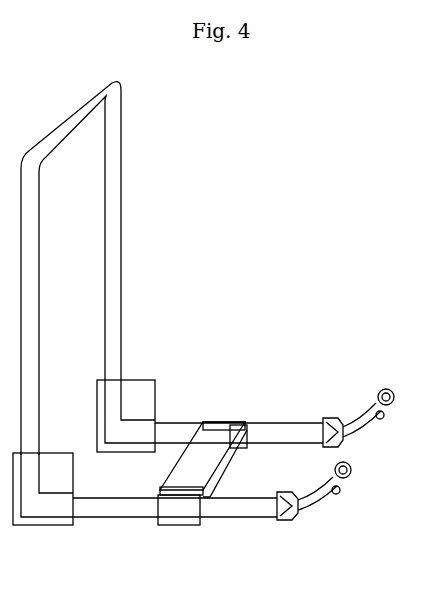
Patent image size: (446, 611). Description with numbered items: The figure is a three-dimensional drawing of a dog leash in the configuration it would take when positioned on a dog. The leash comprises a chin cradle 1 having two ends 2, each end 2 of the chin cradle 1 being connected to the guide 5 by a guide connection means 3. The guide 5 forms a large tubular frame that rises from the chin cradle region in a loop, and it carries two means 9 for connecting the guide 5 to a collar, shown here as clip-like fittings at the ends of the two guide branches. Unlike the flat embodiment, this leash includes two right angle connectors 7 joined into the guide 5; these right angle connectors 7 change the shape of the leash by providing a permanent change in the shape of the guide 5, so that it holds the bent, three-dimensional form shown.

The chin cradle 1 is at (203, 459).
The ends 2 is at (212, 425).
The guide connection means 3 is at (240, 436).
The guide 5 is at (112, 243).
The right angle connector 7 is at (117, 423).
The means for connecting the guide to a collar 9 is at (335, 461).